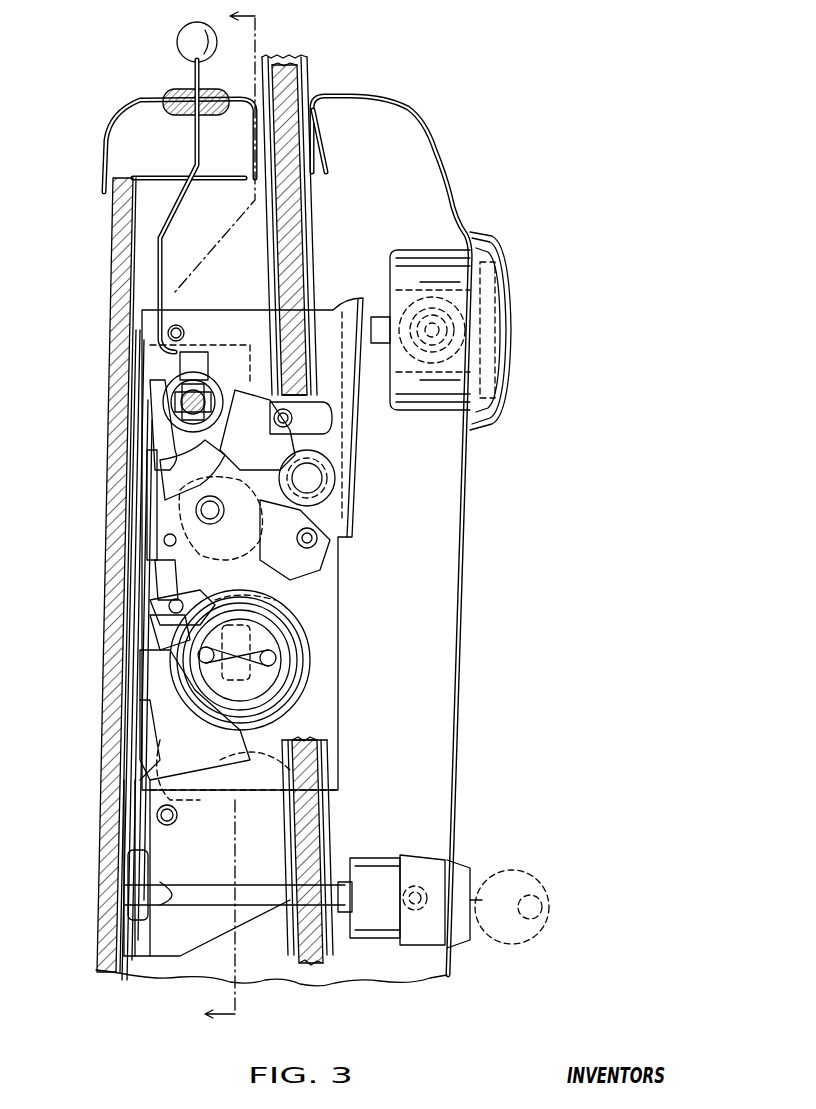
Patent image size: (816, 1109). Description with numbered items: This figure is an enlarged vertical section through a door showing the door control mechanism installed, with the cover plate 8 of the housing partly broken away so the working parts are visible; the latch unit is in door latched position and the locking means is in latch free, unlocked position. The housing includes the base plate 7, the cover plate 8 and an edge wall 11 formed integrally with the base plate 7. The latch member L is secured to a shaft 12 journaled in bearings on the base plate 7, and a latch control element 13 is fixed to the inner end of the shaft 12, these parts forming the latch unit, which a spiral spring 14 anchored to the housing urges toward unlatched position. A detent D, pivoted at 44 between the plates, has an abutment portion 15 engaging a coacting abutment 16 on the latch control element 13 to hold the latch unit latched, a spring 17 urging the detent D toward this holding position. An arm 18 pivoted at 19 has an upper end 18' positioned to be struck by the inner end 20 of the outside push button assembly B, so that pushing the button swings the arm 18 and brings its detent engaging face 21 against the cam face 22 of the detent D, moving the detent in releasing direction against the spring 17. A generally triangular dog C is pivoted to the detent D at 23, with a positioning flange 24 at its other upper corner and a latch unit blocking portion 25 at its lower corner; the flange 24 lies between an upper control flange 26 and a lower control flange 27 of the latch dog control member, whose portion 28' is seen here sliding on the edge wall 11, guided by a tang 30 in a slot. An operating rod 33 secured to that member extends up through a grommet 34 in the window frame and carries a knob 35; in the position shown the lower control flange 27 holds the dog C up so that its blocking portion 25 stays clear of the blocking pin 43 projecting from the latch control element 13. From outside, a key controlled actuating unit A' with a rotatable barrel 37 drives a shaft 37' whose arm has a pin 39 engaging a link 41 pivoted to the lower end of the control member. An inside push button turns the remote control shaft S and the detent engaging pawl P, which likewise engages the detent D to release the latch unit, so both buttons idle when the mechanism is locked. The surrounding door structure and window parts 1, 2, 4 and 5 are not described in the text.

The door outer panel 1 is at (467, 640).
The door inner panel 2 is at (113, 368).
The section line 4- 4 is at (226, 523).
The window glass 5 is at (302, 215).
The base plate 7 is at (230, 318).
The cover plate 8 is at (200, 792).
The edge wall 11 is at (140, 418).
The shaft 12 is at (242, 646).
The latch control element 13 is at (150, 652).
The spiral spring 14 is at (312, 660).
The abutment portion 15 is at (195, 605).
The abutment 16 is at (162, 602).
The spring 17 is at (150, 700).
The arm 18 is at (304, 448).
The upper end of arm 18' is at (324, 352).
The pivot 19 is at (330, 548).
The inner end of push button assembly 20 is at (376, 344).
The detent engaging face 21 is at (303, 528).
The cam face 22 is at (247, 613).
The pivot 23 is at (245, 582).
The positioning flange 24 is at (152, 496).
The latch unit blocking portion 25 is at (152, 582).
The upper control flange 26 is at (162, 470).
The lower control flange 27 is at (152, 515).
The hub 28' is at (142, 378).
The tang 30 is at (152, 540).
The operating rod 33 is at (188, 145).
The grommet 34 is at (178, 88).
The knob 35 is at (182, 40).
The rotatable barrel 37 is at (391, 889).
The shaft 37' is at (234, 920).
The pin 39 is at (172, 890).
The link 41 is at (160, 838).
The blocking pin 43 is at (169, 624).
The detent supporting pin 44 is at (220, 522).
The key controlled actuating unit A' is at (498, 891).
The outside push button assembly B is at (510, 330).
The dog C is at (150, 556).
The detent D is at (164, 537).
The latch member L is at (221, 750).
The detent engaging pawl P is at (166, 452).
The remote control shaft S is at (200, 356).